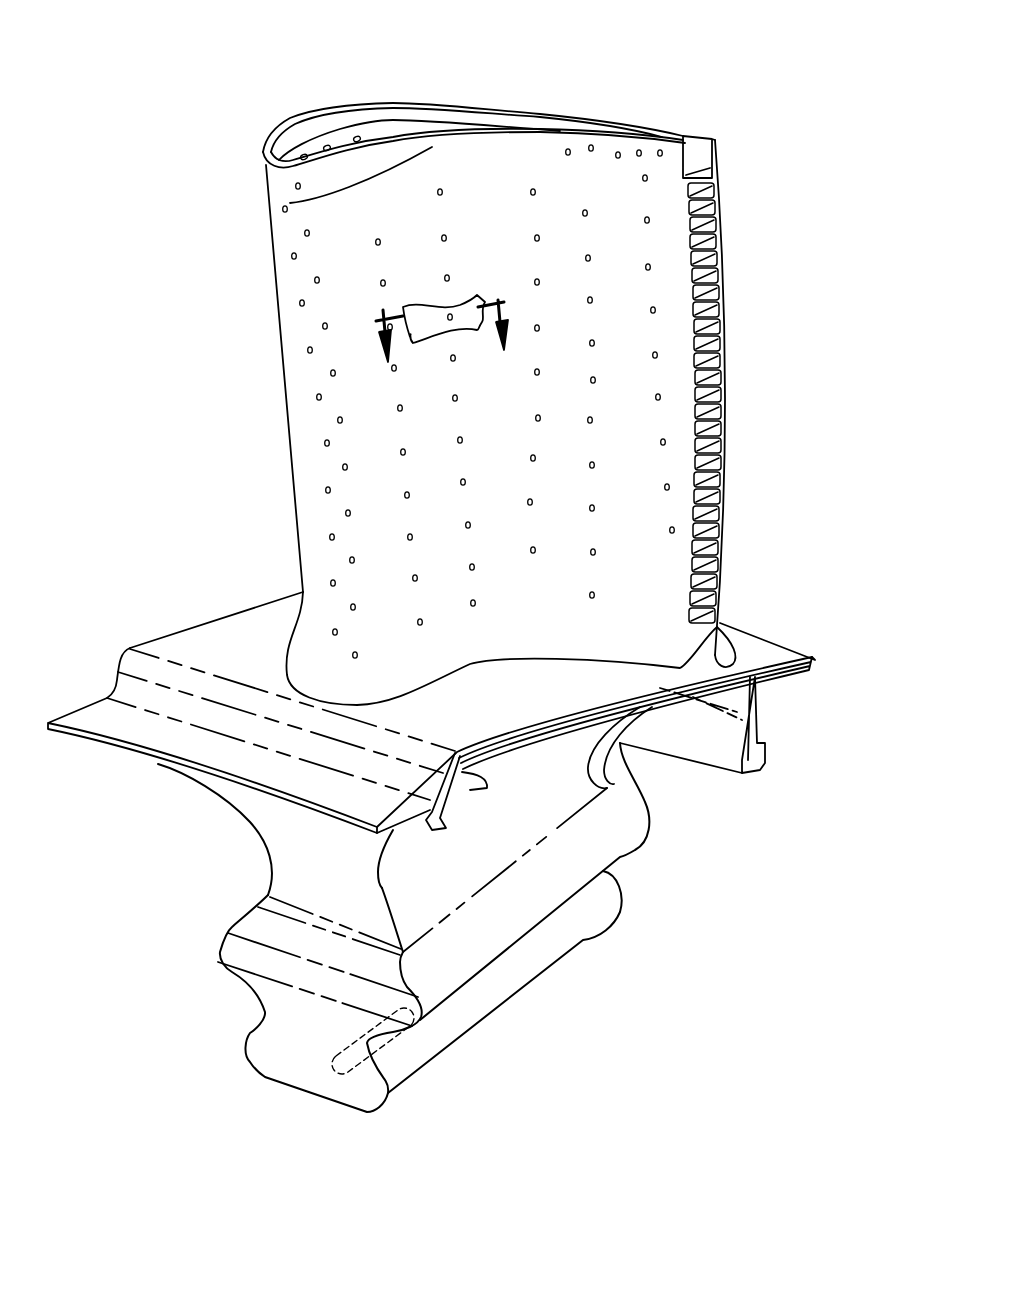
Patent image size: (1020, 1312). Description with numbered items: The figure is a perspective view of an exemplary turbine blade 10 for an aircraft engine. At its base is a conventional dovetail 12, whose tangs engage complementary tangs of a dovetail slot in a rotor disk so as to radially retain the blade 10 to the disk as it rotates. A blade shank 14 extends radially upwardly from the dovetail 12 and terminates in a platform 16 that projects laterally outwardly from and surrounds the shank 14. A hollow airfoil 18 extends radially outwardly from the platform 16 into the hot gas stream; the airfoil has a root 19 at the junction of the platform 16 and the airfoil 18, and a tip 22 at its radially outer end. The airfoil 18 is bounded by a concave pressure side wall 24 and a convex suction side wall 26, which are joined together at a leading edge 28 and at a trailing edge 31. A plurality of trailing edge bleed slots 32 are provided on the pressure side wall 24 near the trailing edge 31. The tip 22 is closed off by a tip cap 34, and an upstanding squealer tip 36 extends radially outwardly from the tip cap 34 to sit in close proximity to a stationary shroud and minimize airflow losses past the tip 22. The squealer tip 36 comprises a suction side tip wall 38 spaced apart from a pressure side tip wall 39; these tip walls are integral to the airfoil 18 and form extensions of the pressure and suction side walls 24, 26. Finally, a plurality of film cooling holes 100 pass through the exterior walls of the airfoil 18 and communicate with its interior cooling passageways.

The turbine blade 10 is at (563, 72).
The dovetail 12 is at (287, 995).
The blade shank 14 is at (287, 825).
The platform 16 is at (190, 640).
The hollow airfoil 18 is at (274, 405).
The root 19 is at (717, 627).
The tip 22 is at (293, 205).
The pressure side wall 24 is at (656, 593).
The suction side wall 26 is at (327, 268).
The leading edge 28 is at (301, 325).
The trailing edge 31 is at (718, 158).
The trailing edge bleed slots 32 is at (715, 228).
The tip cap 34 is at (318, 134).
The squealer tip 36 is at (226, 132).
The suction side tip wall 38 is at (367, 140).
The pressure side tip wall 39 is at (438, 112).
The film cooling holes 100 is at (453, 307).